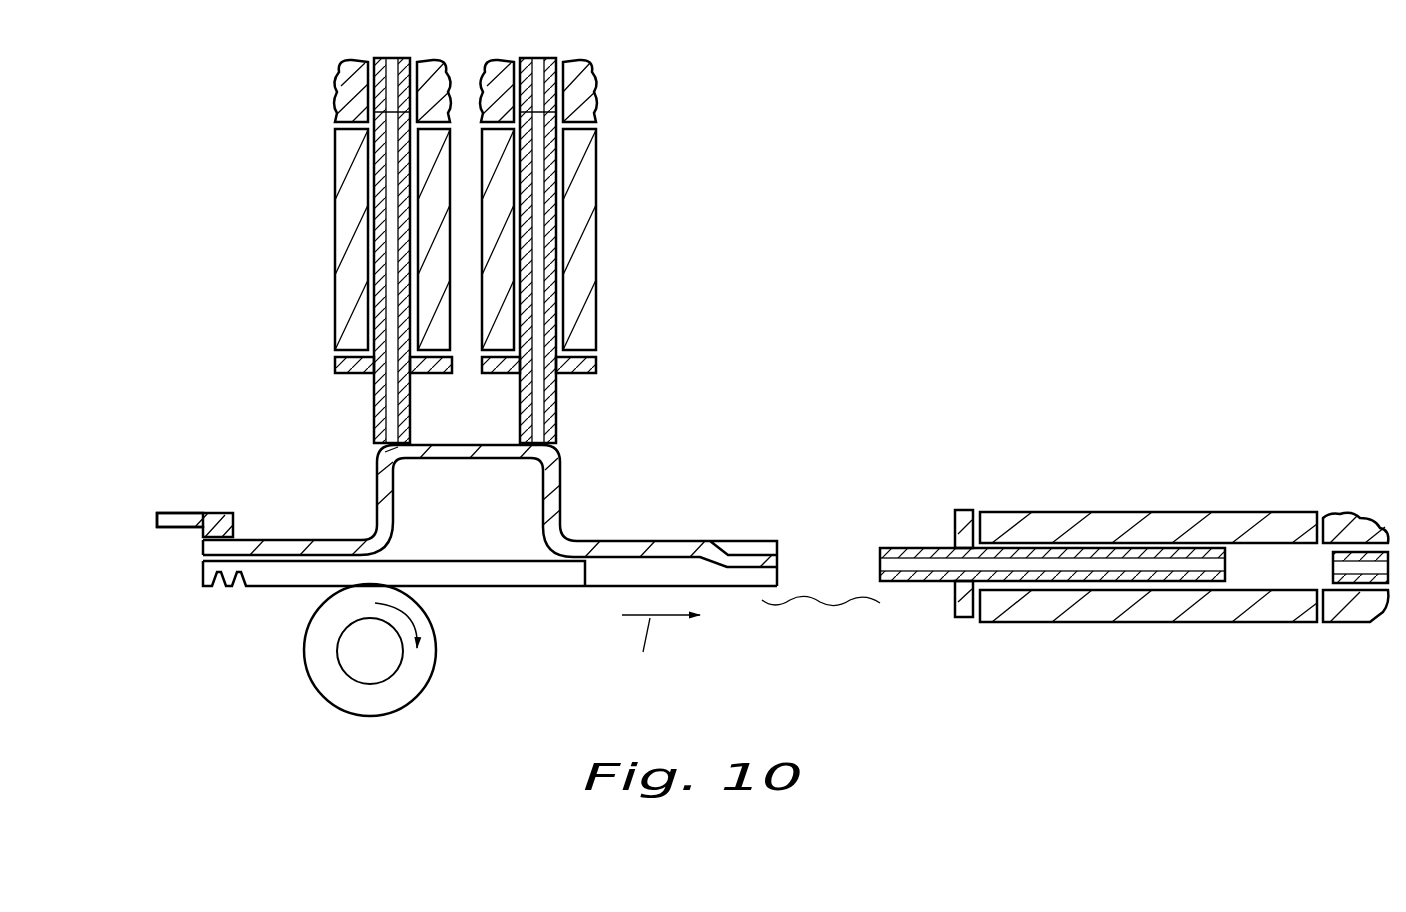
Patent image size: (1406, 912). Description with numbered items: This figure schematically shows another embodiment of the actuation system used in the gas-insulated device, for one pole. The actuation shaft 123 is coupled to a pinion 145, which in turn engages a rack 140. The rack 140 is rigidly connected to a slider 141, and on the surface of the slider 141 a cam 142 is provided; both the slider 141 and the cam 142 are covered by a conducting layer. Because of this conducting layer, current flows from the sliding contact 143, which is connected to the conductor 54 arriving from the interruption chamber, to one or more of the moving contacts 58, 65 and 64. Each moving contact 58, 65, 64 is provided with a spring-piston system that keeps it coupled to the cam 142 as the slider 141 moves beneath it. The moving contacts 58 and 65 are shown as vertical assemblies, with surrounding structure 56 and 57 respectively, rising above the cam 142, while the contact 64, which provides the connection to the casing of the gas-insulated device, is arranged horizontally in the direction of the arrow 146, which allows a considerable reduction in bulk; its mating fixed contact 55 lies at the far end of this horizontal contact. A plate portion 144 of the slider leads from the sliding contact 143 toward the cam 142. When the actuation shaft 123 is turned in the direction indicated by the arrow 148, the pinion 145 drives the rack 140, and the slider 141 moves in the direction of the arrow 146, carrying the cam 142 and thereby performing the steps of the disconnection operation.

The conductor 54 is at (155, 515).
The electrical contact 55 is at (1358, 513).
The tube assembly 56 is at (318, 93).
The tube assembly 57 is at (605, 90).
The moving contact 58 is at (395, 245).
The moving contact 64 is at (1095, 567).
The moving contact 65 is at (537, 253).
The actuation shaft 123 is at (343, 673).
The rack 140 is at (287, 587).
The slider 141 is at (698, 540).
The cam 142 is at (518, 518).
The sliding contact 143 is at (207, 505).
The plate portion 144 is at (300, 537).
The pinion 145 is at (417, 700).
The arrow 146 is at (664, 662).
The arrow 148 is at (428, 622).